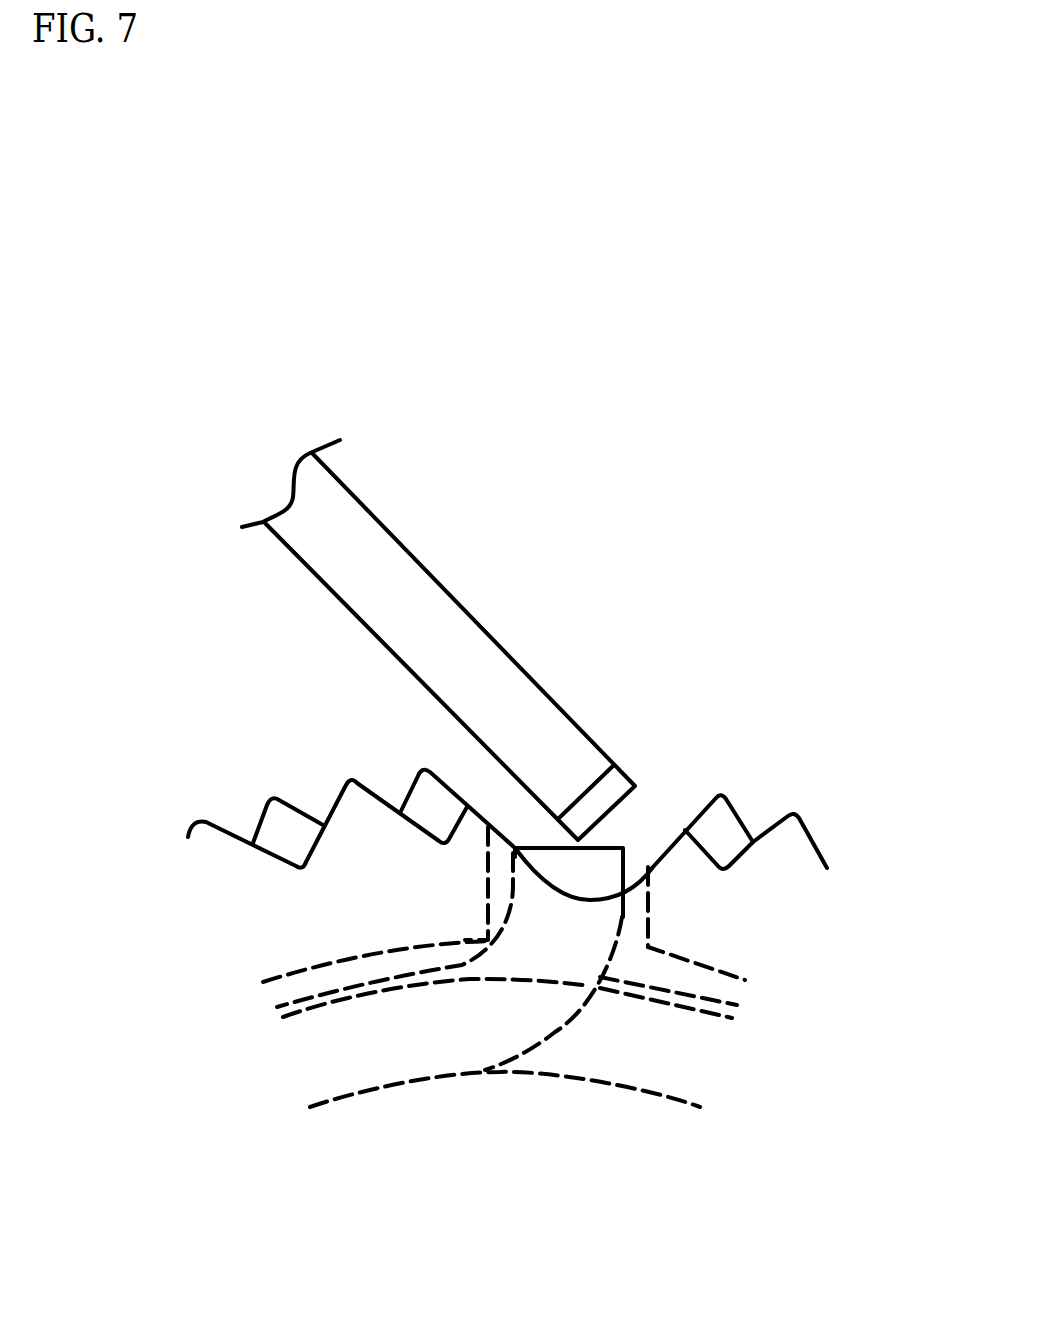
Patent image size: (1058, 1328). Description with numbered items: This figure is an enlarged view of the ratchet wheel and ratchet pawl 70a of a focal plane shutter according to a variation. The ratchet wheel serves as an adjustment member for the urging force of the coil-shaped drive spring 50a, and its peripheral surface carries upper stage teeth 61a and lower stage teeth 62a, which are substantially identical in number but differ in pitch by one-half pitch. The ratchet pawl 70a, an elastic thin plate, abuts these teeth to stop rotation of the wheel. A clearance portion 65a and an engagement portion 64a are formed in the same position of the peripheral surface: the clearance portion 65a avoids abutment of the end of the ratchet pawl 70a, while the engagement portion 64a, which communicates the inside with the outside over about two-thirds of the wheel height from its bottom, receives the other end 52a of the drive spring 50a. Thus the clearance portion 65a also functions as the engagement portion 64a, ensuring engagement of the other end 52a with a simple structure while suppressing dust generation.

The drive spring 50a is at (432, 1067).
The other end of the drive spring 52a is at (618, 845).
The upper stage teeth 61a is at (280, 820).
The lower stage teeth 62a is at (360, 820).
The engagement portion 64a is at (637, 927).
The clearance portion 65a is at (670, 830).
The ratchet pawl 70a is at (430, 565).